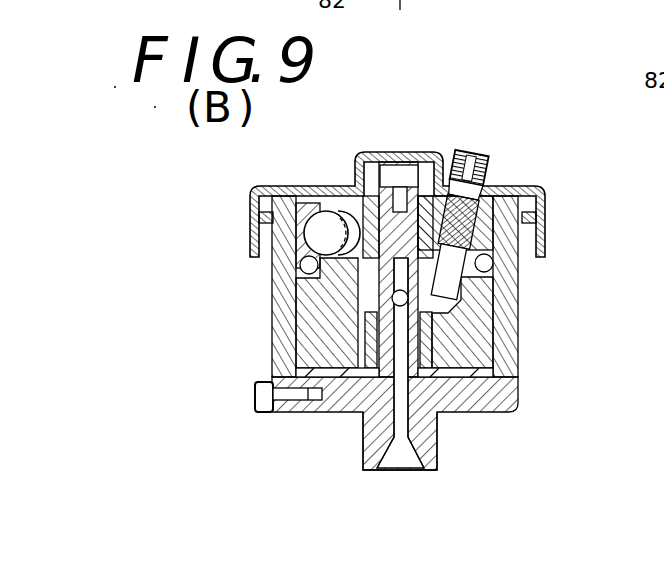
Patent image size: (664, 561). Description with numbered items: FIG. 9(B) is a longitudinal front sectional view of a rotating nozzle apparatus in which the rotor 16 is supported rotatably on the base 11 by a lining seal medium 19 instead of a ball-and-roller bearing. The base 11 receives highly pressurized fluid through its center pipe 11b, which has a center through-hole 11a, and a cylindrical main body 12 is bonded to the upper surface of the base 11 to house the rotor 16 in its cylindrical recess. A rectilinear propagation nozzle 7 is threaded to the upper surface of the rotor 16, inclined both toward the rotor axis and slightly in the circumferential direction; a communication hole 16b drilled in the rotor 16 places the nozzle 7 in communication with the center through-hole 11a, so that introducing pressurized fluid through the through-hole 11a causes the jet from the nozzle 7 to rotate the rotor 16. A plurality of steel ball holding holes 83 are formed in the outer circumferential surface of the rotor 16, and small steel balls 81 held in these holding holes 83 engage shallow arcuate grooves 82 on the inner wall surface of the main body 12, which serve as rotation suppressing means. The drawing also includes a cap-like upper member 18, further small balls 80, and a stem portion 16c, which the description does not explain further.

The rectilinear propagation nozzle 7 is at (480, 150).
The base 11 is at (492, 413).
The center through-hole 11a is at (398, 418).
The center pipe 11b is at (342, 412).
The cylindrical main body 12 is at (517, 303).
The rotor 16 is at (500, 336).
The communication hole 16b is at (458, 413).
The valve stem 16c is at (390, 305).
The cap 18 is at (544, 201).
The lining seal medium 19 is at (517, 372).
The ball 80 is at (300, 270).
The steel balls 81 is at (321, 212).
The shallow arcuate grooves 82 is at (254, 207).
The steel ball holding holes 83 is at (302, 205).